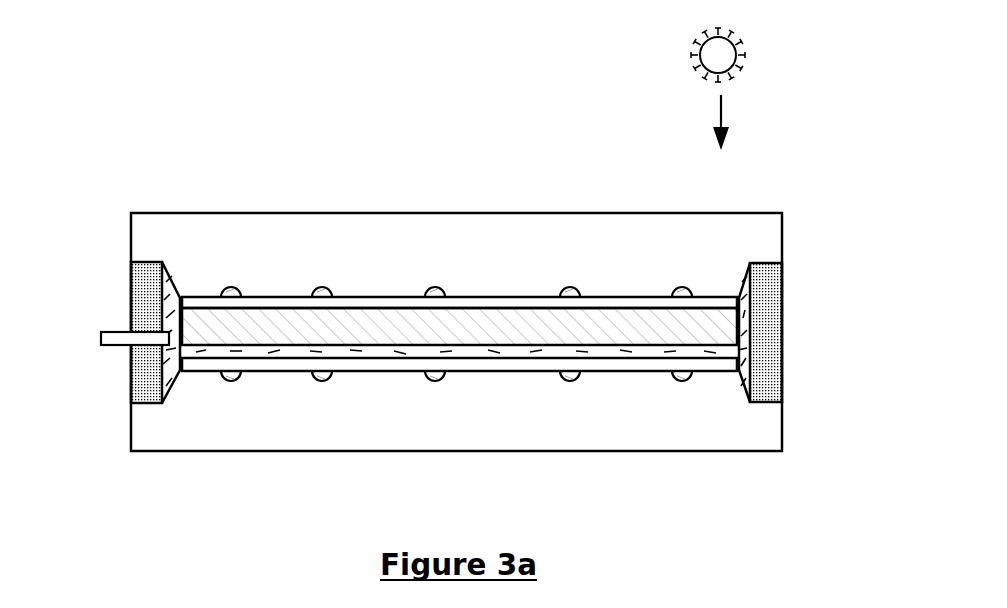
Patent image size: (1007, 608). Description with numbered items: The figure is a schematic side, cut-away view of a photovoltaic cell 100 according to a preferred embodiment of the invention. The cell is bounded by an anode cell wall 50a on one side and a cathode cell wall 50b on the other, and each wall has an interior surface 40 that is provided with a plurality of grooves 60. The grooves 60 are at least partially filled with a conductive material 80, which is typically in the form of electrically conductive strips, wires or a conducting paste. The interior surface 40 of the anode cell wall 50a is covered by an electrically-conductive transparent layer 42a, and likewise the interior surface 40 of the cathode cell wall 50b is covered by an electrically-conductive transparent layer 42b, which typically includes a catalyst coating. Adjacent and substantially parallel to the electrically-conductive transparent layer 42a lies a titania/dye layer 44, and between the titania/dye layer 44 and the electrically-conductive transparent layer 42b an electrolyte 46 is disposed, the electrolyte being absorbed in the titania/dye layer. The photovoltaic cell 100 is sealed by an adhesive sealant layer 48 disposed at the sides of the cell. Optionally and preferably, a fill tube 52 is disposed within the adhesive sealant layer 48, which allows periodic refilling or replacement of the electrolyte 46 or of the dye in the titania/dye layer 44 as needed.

The photovoltaic cell 100 is at (115, 110).
The interior surface 40 is at (720, 297).
The electrically-conductive transparent layer 42a is at (635, 302).
The electrically-conductive transparent layer 42b is at (622, 363).
The titania/dye layer 44 is at (522, 323).
The electrolyte 46 is at (360, 352).
The adhesive sealant layer 48 is at (142, 353).
The anode cell wall 50a is at (315, 240).
The cathode cell wall 50b is at (308, 430).
The fill tube 52 is at (117, 337).
The grooves 60 is at (232, 297).
The conductive material 80 is at (570, 377).